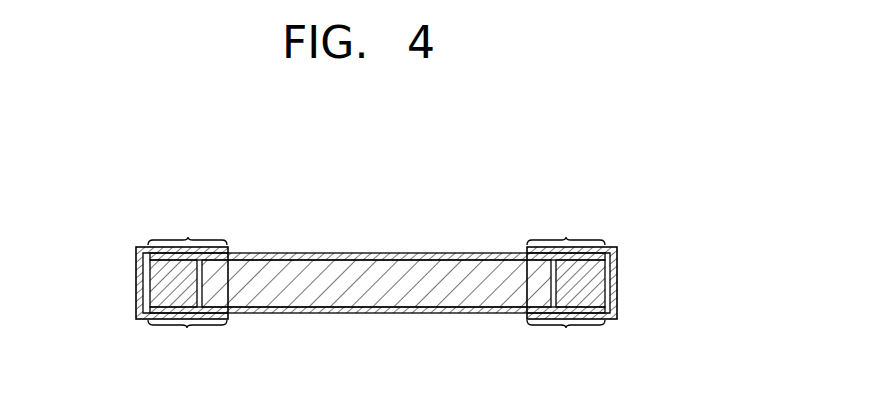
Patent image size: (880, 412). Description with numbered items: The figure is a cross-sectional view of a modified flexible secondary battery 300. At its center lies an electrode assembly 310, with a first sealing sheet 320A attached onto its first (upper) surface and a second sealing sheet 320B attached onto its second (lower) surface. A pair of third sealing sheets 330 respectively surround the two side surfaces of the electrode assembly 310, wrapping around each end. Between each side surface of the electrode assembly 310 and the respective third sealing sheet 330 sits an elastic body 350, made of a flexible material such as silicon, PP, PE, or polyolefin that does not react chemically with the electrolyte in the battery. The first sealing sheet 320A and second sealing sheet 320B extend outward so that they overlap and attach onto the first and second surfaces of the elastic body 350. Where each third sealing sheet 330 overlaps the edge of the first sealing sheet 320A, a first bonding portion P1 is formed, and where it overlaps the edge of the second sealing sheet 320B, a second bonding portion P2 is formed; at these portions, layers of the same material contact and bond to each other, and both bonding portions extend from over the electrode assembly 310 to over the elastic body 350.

The flexible secondary battery 300 is at (655, 195).
The electrode assembly 310 is at (318, 276).
The first sealing sheet 320A is at (448, 254).
The second sealing sheet 320B is at (402, 310).
The third sealing sheet 330 is at (214, 247).
The elastic body 350 is at (172, 288).
The first bonding portion P1 is at (376, 231).
The second bonding portion P2 is at (376, 338).